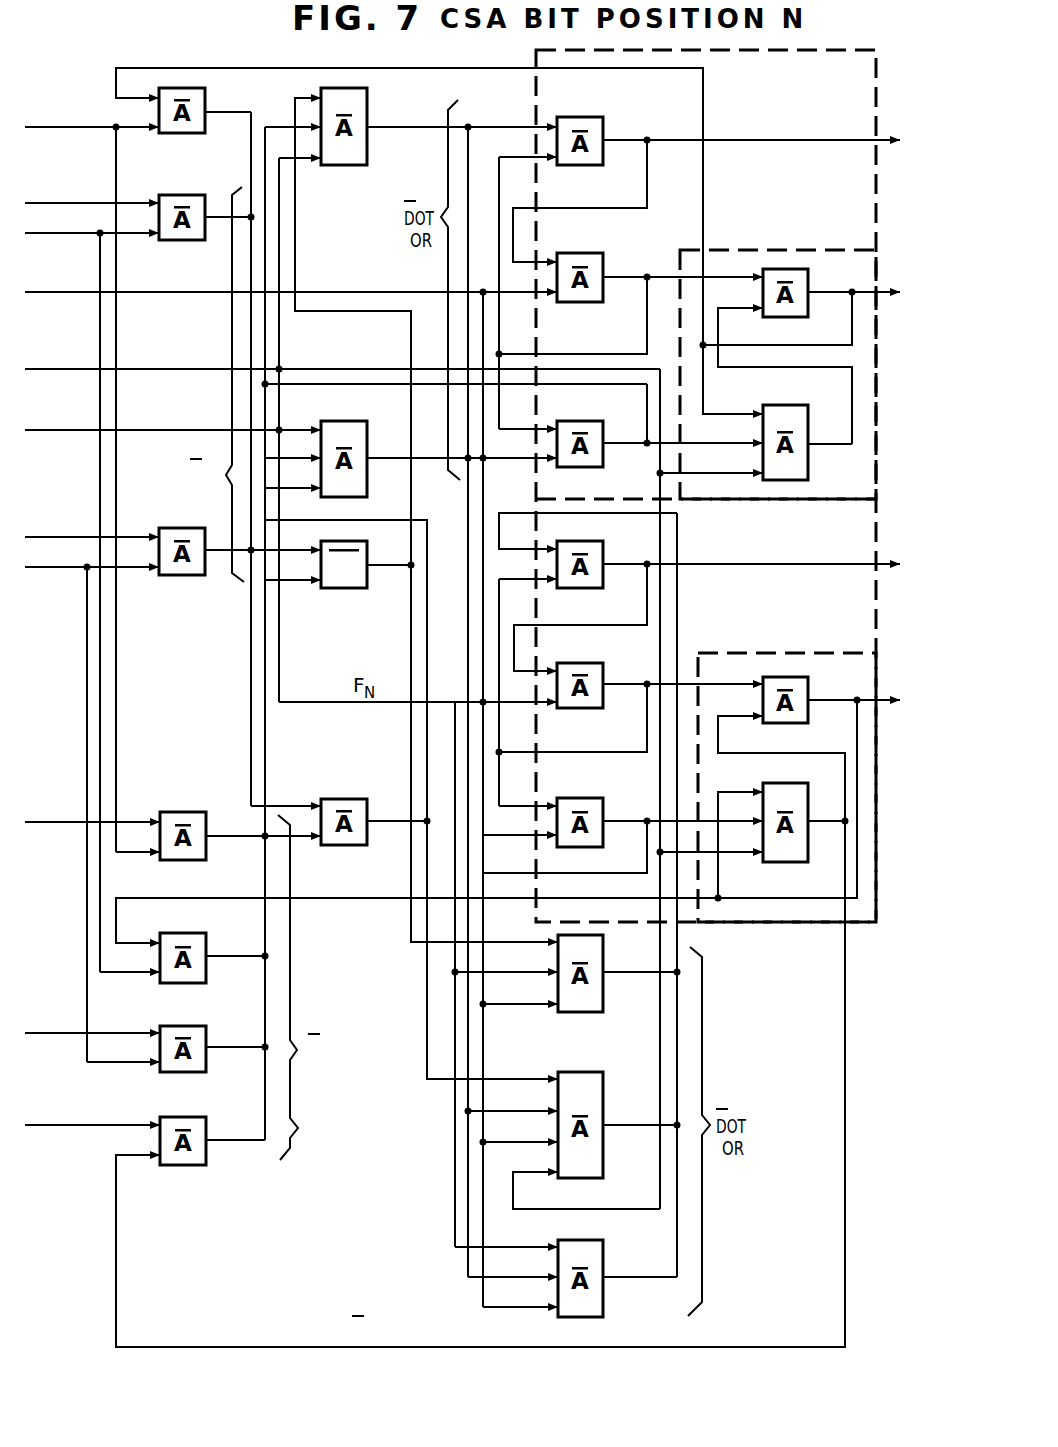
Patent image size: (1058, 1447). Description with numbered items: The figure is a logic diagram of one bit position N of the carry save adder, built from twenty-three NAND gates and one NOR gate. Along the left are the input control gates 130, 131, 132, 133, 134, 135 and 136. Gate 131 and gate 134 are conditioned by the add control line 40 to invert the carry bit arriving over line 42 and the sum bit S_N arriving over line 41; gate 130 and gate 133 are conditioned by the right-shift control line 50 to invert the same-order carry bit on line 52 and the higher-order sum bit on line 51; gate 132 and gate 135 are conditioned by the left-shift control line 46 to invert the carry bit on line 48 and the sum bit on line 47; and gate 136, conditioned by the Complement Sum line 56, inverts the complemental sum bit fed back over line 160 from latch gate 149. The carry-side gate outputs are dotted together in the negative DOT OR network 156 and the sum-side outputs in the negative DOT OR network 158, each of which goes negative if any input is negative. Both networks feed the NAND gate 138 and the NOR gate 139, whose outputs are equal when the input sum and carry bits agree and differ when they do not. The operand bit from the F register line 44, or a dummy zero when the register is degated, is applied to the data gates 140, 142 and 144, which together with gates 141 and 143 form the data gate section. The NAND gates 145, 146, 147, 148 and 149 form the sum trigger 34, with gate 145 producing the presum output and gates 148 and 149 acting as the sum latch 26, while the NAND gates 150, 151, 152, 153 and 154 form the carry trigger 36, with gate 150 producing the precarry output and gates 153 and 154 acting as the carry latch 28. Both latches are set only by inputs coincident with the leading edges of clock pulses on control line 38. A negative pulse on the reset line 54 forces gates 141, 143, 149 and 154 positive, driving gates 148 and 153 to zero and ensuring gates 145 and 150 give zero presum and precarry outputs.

The sum latch 26 is at (783, 633).
The carry latch 28 is at (795, 218).
The sum trigger 34 is at (770, 532).
The carry trigger 36 is at (788, 91).
The clock control line 38 is at (60, 289).
The control line 40 is at (60, 230).
The sum input line 41 is at (336, 900).
The carry input line 42 is at (60, 200).
The F register line 44 is at (60, 427).
The control line 46 is at (60, 564).
The sum input line 47 is at (60, 1030).
The carry input line 48 is at (60, 534).
The control line 50 is at (60, 124).
The sum input line 51 is at (60, 819).
The carry input line 52 is at (173, 66).
The reset line 54 is at (60, 366).
The Complement Sum line 56 is at (60, 1122).
The NAND gate 130 is at (185, 133).
The NAND gate 131 is at (185, 240).
The NAND gate 132 is at (185, 575).
The NAND gate 133 is at (186, 860).
The NAND gate 134 is at (186, 983).
The NAND gate 135 is at (186, 1072).
The NAND gate 136 is at (186, 1165).
The NAND gate 138 is at (350, 797).
The NOR gate 139 is at (350, 588).
The data gate 140 is at (350, 420).
The NAND gate 141 is at (368, 100).
The data gate 142 is at (590, 1012).
The NAND gate 143 is at (592, 1072).
The data gate 144 is at (592, 1240).
The NAND gate 145 is at (588, 541).
The NAND gate 146 is at (588, 663).
The NAND gate 147 is at (588, 798).
The NAND gate 148 is at (800, 690).
The latch gate 149 is at (795, 783).
The NAND gate 150 is at (583, 117).
The NAND gate 151 is at (583, 253).
The NAND gate 152 is at (583, 421).
The NAND gate 153 is at (800, 282).
The NAND gate 154 is at (808, 420).
The negative DOT OR network 156 is at (232, 338).
The negative DOT OR network 158 is at (298, 1128).
The line 160 is at (845, 1040).